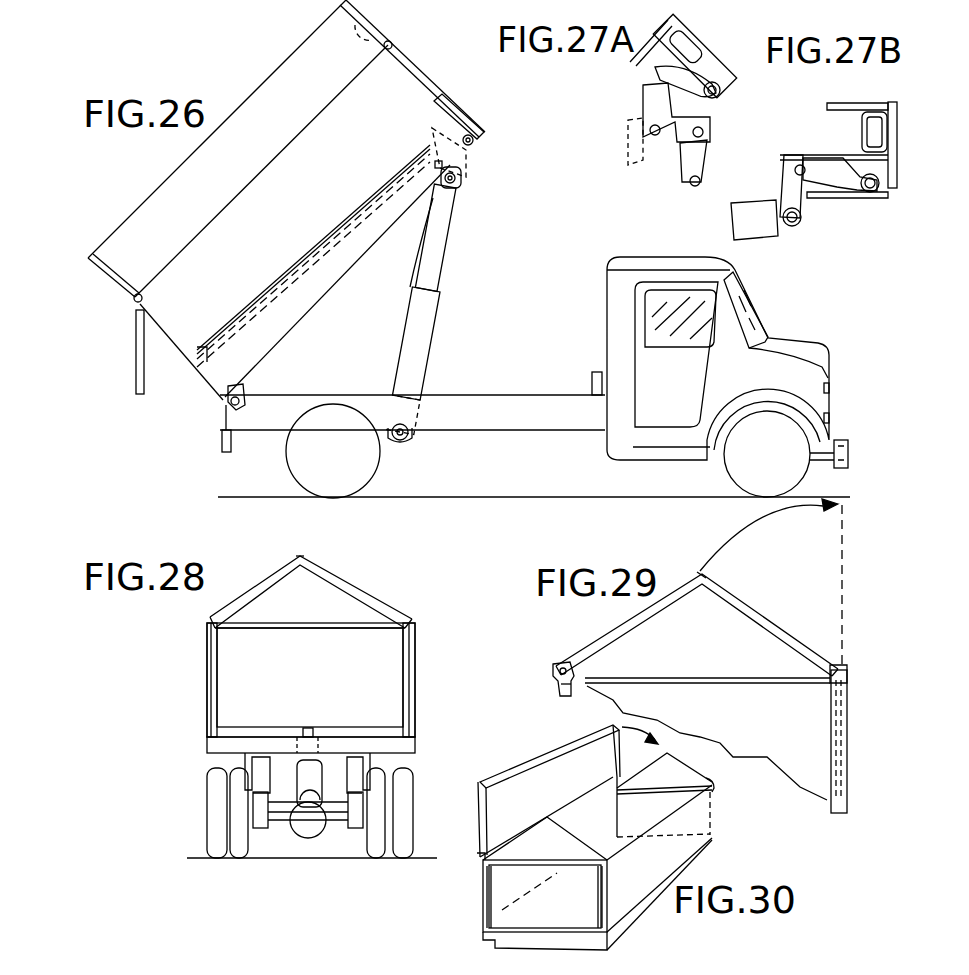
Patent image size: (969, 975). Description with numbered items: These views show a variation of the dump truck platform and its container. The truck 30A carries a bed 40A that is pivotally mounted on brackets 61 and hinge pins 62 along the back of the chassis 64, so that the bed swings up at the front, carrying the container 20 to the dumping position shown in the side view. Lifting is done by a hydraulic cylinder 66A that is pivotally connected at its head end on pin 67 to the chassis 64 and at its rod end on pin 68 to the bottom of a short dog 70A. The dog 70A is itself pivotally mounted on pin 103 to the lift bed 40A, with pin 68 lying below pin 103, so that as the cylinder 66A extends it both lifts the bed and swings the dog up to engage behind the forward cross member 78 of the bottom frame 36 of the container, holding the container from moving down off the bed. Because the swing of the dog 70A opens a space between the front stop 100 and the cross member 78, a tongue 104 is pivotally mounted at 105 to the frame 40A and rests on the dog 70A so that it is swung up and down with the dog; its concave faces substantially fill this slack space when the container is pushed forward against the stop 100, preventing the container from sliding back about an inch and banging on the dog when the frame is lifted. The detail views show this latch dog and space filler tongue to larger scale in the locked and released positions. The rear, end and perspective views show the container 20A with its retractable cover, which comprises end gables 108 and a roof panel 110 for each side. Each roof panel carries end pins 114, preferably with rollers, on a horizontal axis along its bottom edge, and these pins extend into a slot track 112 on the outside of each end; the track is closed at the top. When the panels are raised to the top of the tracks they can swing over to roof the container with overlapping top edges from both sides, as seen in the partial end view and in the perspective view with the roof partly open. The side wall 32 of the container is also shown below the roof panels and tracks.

In FIG. 26, the container 20 is at (428, 80).
In FIG. 27A, the container 20 is at (652, 78).
In FIG. 27B, the container 20 is at (837, 103).
In FIG. 28, the container 20A is at (207, 653).
In FIG. 29, the container 20A is at (608, 635).
In FIG. 30, the container 20A is at (697, 857).
In FIG. 26, the truck 30A is at (767, 333).
In FIG. 28, the truck 30A is at (207, 798).
In FIG. 26, the side wall panel 32 is at (140, 398).
In FIG. 28, the side wall panel 32 is at (228, 688).
In FIG. 29, the side wall panel 32 is at (817, 750).
In FIG. 30, the side wall panel 32 is at (502, 913).
In FIG. 26, the bottom frame 36 is at (195, 380).
In FIG. 26, the bed 40A is at (472, 150).
In FIG. 27A, the bed 40A is at (640, 147).
In FIG. 27B, the bed 40A is at (783, 172).
In FIG. 28, the bed 40A is at (207, 752).
In FIG. 26, the brackets 61 is at (243, 384).
In FIG. 26, the hinge pins 62 is at (223, 414).
In FIG. 28, the hinge pins 62 is at (243, 765).
In FIG. 26, the chassis 64 is at (500, 432).
In FIG. 26, the hydraulic cylinder 66A is at (426, 347).
In FIG. 27A, the hydraulic cylinder 66A is at (683, 187).
In FIG. 27B, the hydraulic cylinder 66A is at (733, 212).
In FIG. 28, the hydraulic cylinder 66A is at (317, 840).
In FIG. 26, the pin 67 is at (408, 440).
In FIG. 26, the pin 68 is at (462, 187).
In FIG. 27A, the pin 68 is at (677, 150).
In FIG. 27B, the pin 68 is at (800, 218).
In FIG. 26, the short dog 70A is at (470, 163).
In FIG. 27A, the short dog 70A is at (650, 108).
In FIG. 27B, the short dog 70A is at (783, 186).
In FIG. 27B, the forward cross member 78 is at (860, 115).
In FIG. 26, the front stop 100 is at (464, 108).
In FIG. 27A, the front stop 100 is at (683, 30).
In FIG. 27B, the front stop 100 is at (900, 108).
In FIG. 26, the pin 103 is at (398, 242).
In FIG. 27B, the pin 103 is at (800, 166).
In FIG. 26, the tongue 104 is at (478, 132).
In FIG. 27A, the tongue 104 is at (655, 68).
In FIG. 27B, the tongue 104 is at (842, 147).
In FIG. 27A, the pivot 105 is at (716, 86).
In FIG. 27B, the pivot 105 is at (850, 199).
In FIG. 26, the end gables 108 is at (393, 36).
In FIG. 28, the end gables 108 is at (338, 600).
In FIG. 29, the end gables 108 is at (732, 621).
In FIG. 30, the end gables 108 is at (477, 863).
In FIG. 26, the roof panel 110 is at (190, 152).
In FIG. 28, the roof panel 110 is at (296, 554).
In FIG. 29, the roof panel 110 is at (757, 626).
In FIG. 30, the roof panel 110 is at (553, 748).
In FIG. 28, the track 112 is at (417, 686).
In FIG. 29, the track 112 is at (842, 709).
In FIG. 30, the track 112 is at (607, 922).
In FIG. 28, the end pins 114 is at (415, 636).
In FIG. 29, the end pins 114 is at (556, 667).